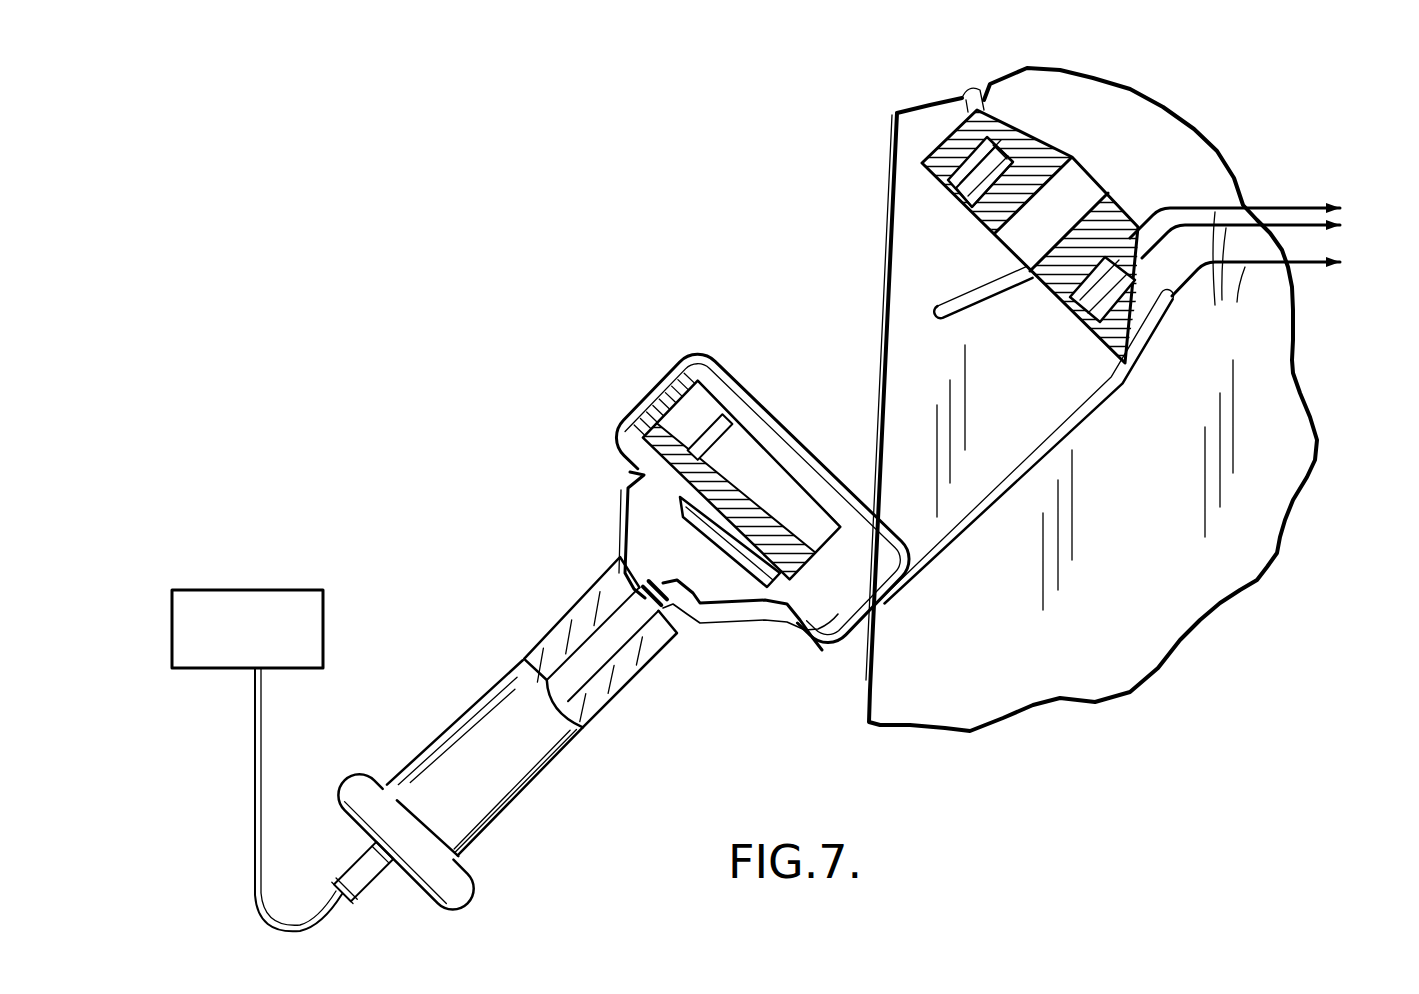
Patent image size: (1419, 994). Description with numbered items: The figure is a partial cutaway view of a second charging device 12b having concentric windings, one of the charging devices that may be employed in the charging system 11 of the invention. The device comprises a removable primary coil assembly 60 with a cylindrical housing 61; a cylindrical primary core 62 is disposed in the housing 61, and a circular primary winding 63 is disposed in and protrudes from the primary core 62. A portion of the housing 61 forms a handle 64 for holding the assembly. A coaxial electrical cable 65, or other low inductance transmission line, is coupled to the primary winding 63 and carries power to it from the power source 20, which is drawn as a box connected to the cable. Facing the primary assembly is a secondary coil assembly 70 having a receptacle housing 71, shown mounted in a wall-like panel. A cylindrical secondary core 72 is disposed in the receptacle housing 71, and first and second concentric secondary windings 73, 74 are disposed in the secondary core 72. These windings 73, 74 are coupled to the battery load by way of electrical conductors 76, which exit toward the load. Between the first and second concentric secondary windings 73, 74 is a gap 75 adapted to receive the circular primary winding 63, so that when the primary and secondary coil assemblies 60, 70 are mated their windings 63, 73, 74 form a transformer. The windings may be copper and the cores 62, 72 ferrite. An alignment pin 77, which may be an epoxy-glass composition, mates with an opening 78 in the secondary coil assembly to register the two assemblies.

The electrical connector system 11 is at (848, 90).
The second charging device 12b is at (668, 178).
The power source 20 is at (327, 592).
The removable primary coil assembly 60 is at (462, 524).
The cylindrical housing 61 is at (553, 627).
The cylindrical primary core 62 is at (678, 467).
The circular primary winding 63 is at (717, 430).
The handle 64 is at (447, 733).
The coaxial electrical cable 65 is at (347, 867).
The secondary coil assembly 70 is at (1262, 129).
The receptacle housing 71 is at (1153, 120).
The cylindrical secondary core 72 is at (1047, 143).
The first concentric secondary winding 73 is at (965, 200).
The second concentric secondary winding 74 is at (948, 173).
The gap 75 is at (1058, 327).
The electrical conductors 76 is at (1148, 403).
The alignment pin 77 is at (948, 327).
The opening 78 is at (757, 497).